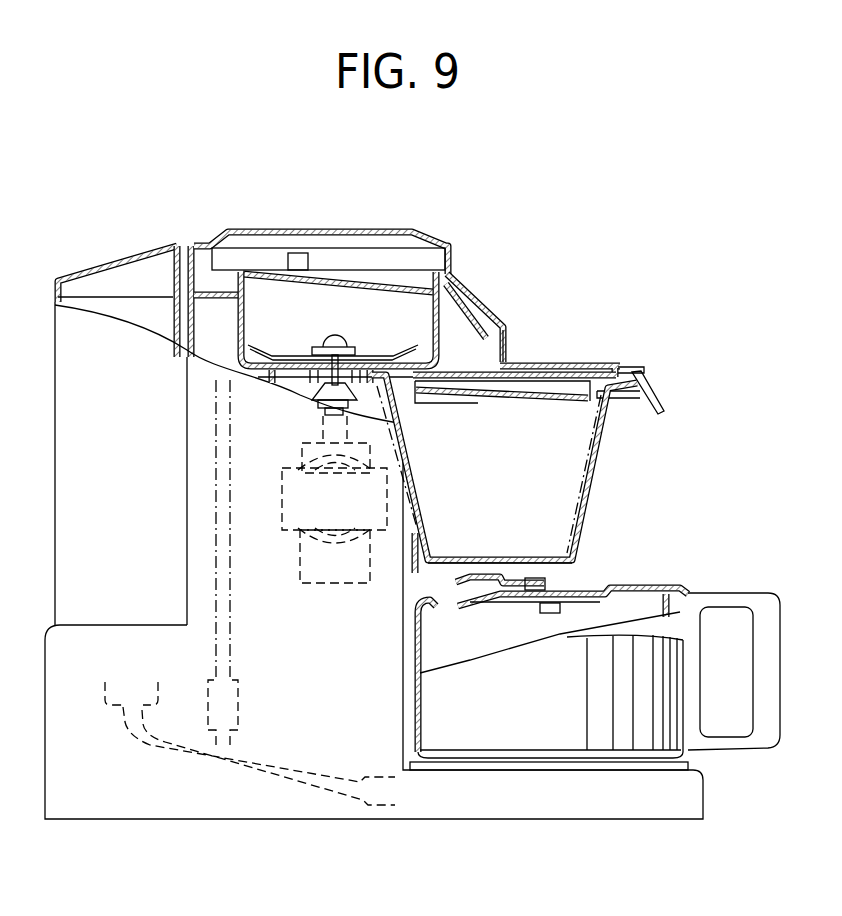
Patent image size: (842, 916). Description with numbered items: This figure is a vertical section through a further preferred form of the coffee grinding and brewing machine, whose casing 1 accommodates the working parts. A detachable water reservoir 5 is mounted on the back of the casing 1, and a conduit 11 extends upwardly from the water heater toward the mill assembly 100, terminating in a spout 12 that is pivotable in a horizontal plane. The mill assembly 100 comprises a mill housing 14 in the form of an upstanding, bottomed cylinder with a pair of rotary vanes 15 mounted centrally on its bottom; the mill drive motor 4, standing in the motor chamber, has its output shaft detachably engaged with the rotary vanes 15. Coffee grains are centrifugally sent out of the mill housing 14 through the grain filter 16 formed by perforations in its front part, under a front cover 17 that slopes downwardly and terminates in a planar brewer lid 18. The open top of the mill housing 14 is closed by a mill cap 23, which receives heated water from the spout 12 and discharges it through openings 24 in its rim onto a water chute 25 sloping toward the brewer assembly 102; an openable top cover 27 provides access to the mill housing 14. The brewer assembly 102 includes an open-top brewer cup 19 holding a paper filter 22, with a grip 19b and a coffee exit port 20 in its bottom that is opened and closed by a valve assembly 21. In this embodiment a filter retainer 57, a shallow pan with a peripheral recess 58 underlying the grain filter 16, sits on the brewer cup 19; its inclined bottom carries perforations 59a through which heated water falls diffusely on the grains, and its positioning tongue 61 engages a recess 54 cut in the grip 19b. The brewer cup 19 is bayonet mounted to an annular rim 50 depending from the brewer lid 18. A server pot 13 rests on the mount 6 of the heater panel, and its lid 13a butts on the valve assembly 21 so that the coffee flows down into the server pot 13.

The casing 1 is at (361, 822).
The mill drive motor 4 is at (285, 497).
The water reservoir 5 is at (62, 440).
The mount 6 is at (688, 762).
The conduit 11 is at (213, 546).
The spout 12 is at (262, 246).
The server pot 13 is at (687, 683).
The lid 13a is at (665, 592).
The mill housing 14 is at (264, 384).
The rotary vanes 15 is at (272, 358).
The grain filter 16 is at (425, 323).
The front cover 17 is at (503, 320).
The brewer lid 18 is at (572, 364).
The brewer cup 19 is at (590, 464).
The grip 19b is at (663, 403).
The coffee exit port 20 is at (523, 559).
The valve assembly 21 is at (548, 578).
The paper filter 22 is at (427, 528).
The mill cap 23 is at (333, 280).
The openings 24 is at (452, 278).
The water chute 25 is at (463, 308).
The top cover 27 is at (397, 230).
The annular rim 50 is at (618, 370).
The recess 54 is at (628, 374).
The filter retainer 57 is at (538, 372).
The recess 58 is at (408, 403).
The perforations 59a is at (527, 401).
The positioning tongue 61 is at (647, 384).
The mill assembly 100 is at (240, 371).
The brewer assembly 102 is at (622, 438).